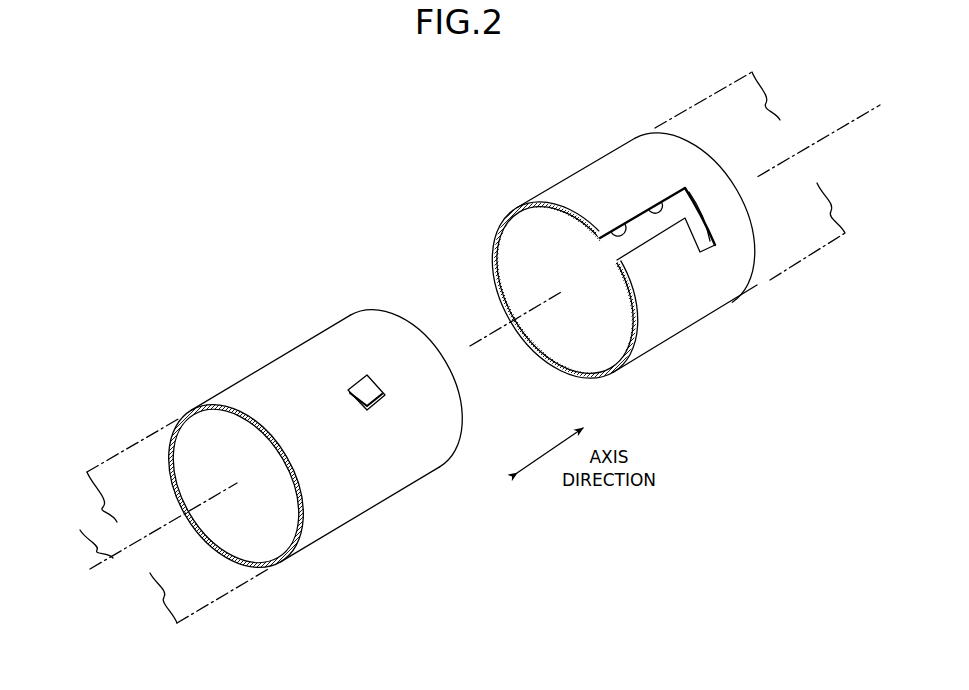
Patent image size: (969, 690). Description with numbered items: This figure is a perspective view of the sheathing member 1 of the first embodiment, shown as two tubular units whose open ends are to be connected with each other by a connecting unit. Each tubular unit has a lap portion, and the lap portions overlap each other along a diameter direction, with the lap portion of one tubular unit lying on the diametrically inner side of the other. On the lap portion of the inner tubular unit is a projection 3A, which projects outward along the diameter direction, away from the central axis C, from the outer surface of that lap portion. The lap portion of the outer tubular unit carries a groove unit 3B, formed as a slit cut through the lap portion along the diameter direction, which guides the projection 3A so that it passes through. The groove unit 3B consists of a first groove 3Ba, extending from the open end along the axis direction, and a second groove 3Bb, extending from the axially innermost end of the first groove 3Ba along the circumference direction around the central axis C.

The sheathing member 1 is at (513, 188).
The projection 3A is at (362, 377).
The groove unit 3B is at (657, 225).
The first groove 3Ba is at (654, 207).
The second groove 3Bb is at (703, 255).
The central axis C is at (473, 337).